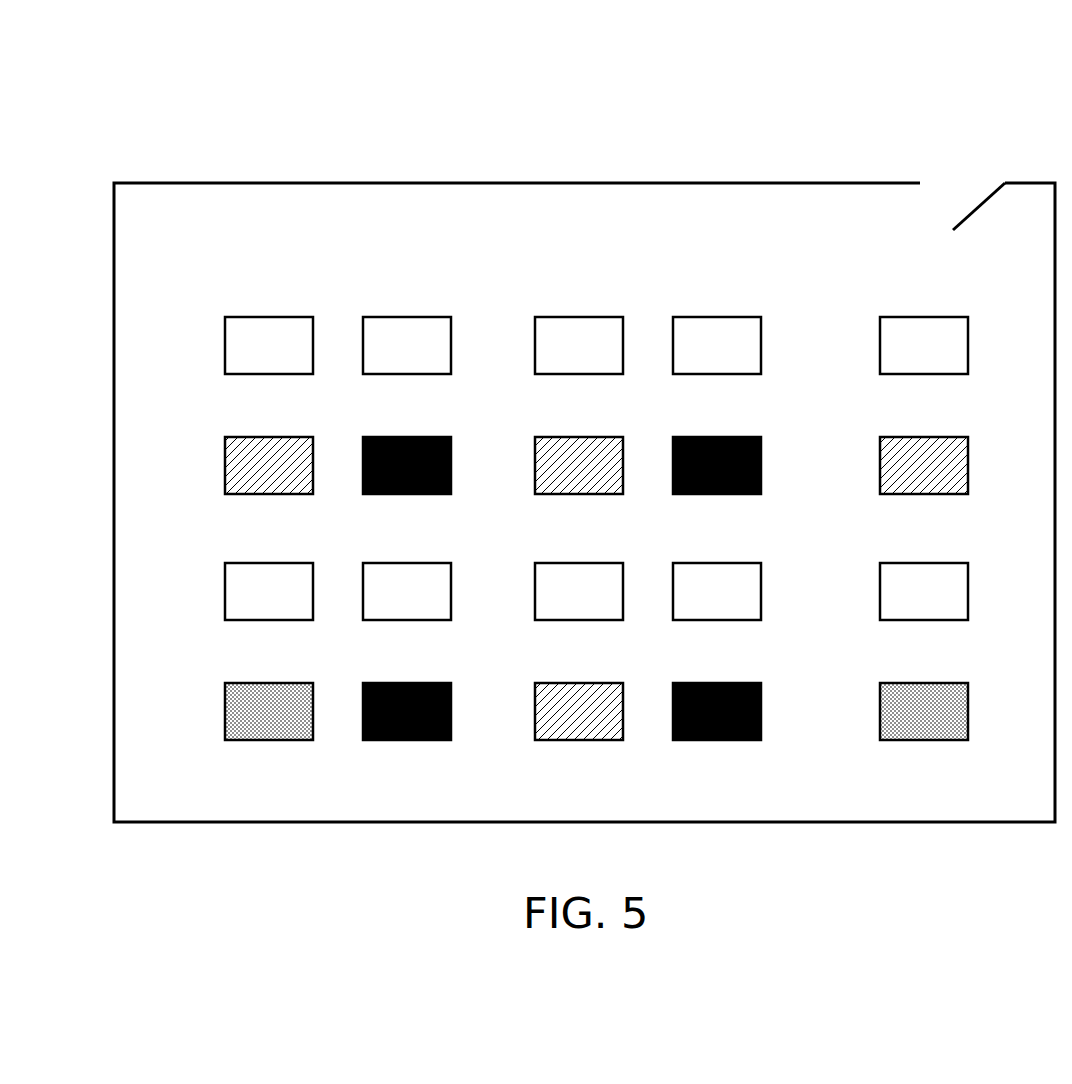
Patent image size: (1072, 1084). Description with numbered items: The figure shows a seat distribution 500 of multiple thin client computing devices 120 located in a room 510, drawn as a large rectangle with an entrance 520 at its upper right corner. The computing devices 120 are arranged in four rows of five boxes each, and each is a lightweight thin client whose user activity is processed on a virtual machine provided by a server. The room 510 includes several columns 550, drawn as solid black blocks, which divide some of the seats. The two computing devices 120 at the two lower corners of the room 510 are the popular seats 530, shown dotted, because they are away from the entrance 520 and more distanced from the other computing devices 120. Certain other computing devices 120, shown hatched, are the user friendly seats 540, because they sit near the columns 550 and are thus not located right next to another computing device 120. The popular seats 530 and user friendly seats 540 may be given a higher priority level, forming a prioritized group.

The display device arrangement 500 is at (53, 165).
The room 510 is at (553, 182).
The entrance 520 is at (967, 178).
The computing device 120 is at (627, 528).
The popular seat 530 is at (627, 692).
The user friendly seat 540 is at (627, 569).
The column 550 is at (431, 437).